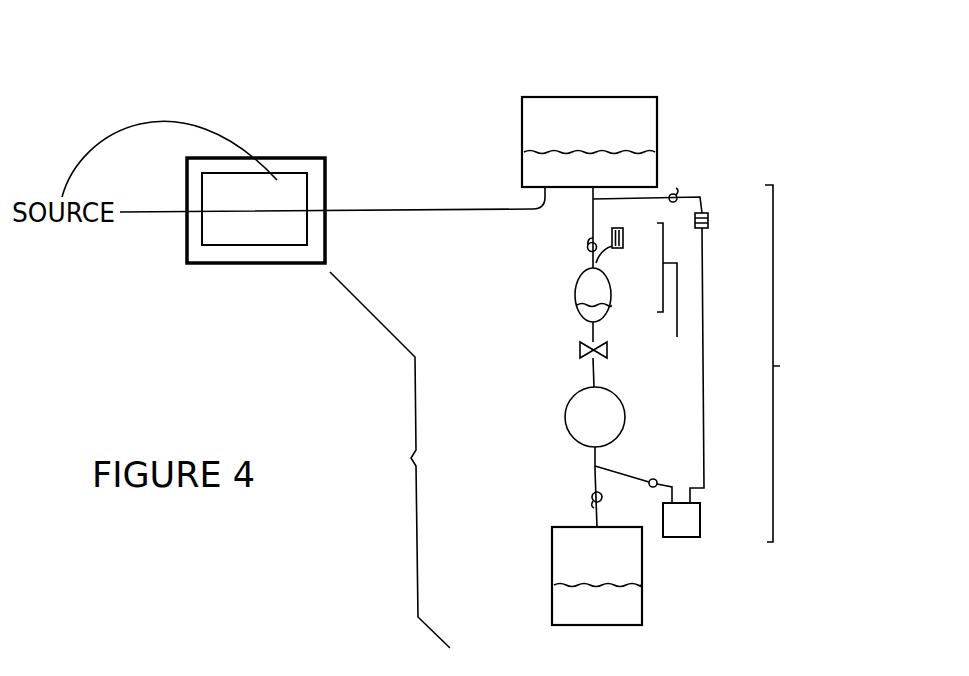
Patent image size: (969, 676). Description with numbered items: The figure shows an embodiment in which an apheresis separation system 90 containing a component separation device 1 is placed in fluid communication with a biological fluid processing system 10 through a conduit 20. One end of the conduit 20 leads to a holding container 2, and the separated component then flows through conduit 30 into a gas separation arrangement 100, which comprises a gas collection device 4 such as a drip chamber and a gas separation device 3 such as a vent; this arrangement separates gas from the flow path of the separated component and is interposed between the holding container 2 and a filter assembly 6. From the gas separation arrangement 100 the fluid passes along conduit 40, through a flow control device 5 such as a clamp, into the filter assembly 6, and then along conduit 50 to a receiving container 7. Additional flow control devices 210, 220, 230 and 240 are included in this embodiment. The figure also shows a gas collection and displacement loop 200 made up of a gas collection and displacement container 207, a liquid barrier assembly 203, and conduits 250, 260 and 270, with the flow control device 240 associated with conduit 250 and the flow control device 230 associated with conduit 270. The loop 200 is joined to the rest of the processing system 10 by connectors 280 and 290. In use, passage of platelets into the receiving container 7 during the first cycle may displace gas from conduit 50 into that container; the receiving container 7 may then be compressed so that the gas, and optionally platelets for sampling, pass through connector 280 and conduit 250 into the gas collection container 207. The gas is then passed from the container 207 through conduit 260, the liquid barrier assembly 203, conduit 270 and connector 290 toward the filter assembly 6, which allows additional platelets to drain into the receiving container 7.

The component separation device 1 is at (232, 247).
The apheresis separation system 90 is at (283, 264).
The conduit 20 is at (407, 208).
The holding container 2 is at (522, 130).
The connector 290 is at (591, 202).
The conduit 30 is at (590, 225).
The flow control device 220 is at (590, 251).
The gas separation device 3 is at (623, 238).
The gas collection device 4 is at (612, 296).
The gas separation arrangement 100 is at (677, 296).
The conduit 40 is at (590, 335).
The flow control device 5 is at (588, 358).
The filter assembly 6 is at (565, 420).
The connector 280 is at (594, 465).
The conduit 50 is at (594, 483).
The conduit 250 is at (650, 479).
The flow control device 240 is at (652, 488).
The flow control device 210 is at (592, 503).
The receiving container 7 is at (552, 570).
The gas collection and displacement container 207 is at (700, 527).
The conduit 260 is at (707, 433).
The conduit 270 is at (700, 197).
The flow control device 230 is at (677, 193).
The liquid barrier assembly 203 is at (710, 213).
The gas collection and displacement loop 200 is at (799, 363).
The biological fluid processing system 10 is at (403, 470).